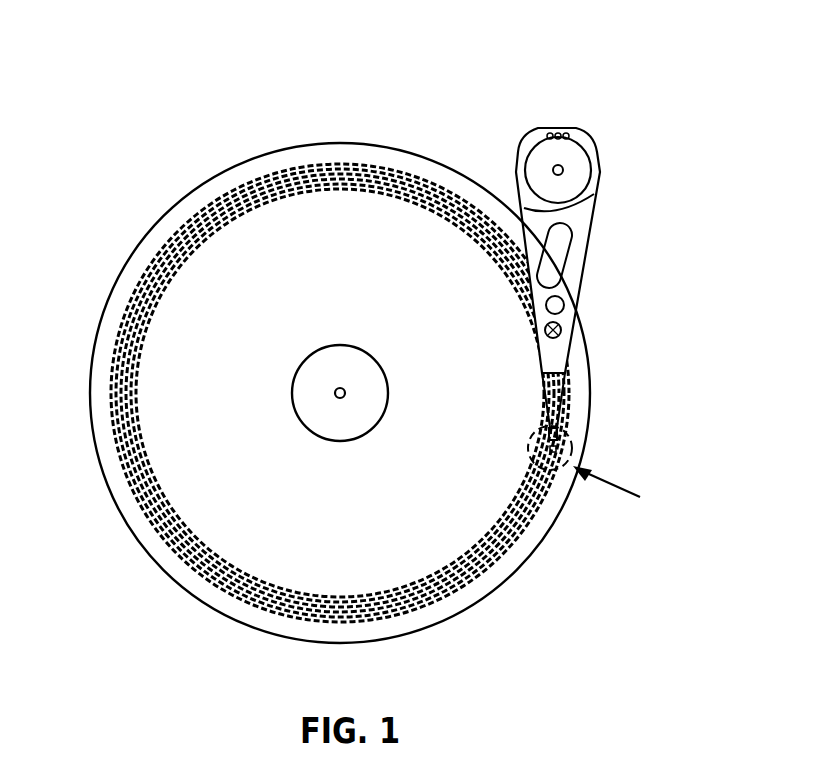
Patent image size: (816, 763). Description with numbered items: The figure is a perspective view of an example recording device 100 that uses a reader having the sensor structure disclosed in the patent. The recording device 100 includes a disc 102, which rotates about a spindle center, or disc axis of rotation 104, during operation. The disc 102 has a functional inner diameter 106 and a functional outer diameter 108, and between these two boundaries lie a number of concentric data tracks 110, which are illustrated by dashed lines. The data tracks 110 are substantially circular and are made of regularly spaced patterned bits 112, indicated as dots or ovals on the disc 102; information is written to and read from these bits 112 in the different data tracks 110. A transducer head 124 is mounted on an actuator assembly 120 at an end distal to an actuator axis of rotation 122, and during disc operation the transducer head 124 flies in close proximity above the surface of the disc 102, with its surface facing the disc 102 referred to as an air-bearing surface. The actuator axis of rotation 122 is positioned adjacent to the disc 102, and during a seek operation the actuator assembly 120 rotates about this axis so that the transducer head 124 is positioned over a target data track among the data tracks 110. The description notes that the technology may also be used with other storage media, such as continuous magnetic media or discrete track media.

The recording device 100 is at (146, 82).
The disc 102 is at (384, 147).
The disc axis of rotation 104 is at (340, 393).
The functional inner diameter 106 is at (327, 347).
The functional outer diameter 108 is at (308, 167).
The data tracks 110 is at (163, 540).
The patterned bits 112 is at (288, 604).
The actuator assembly 120 is at (563, 315).
The actuator axis of rotation 122 is at (562, 168).
The transducer head 124 is at (545, 441).